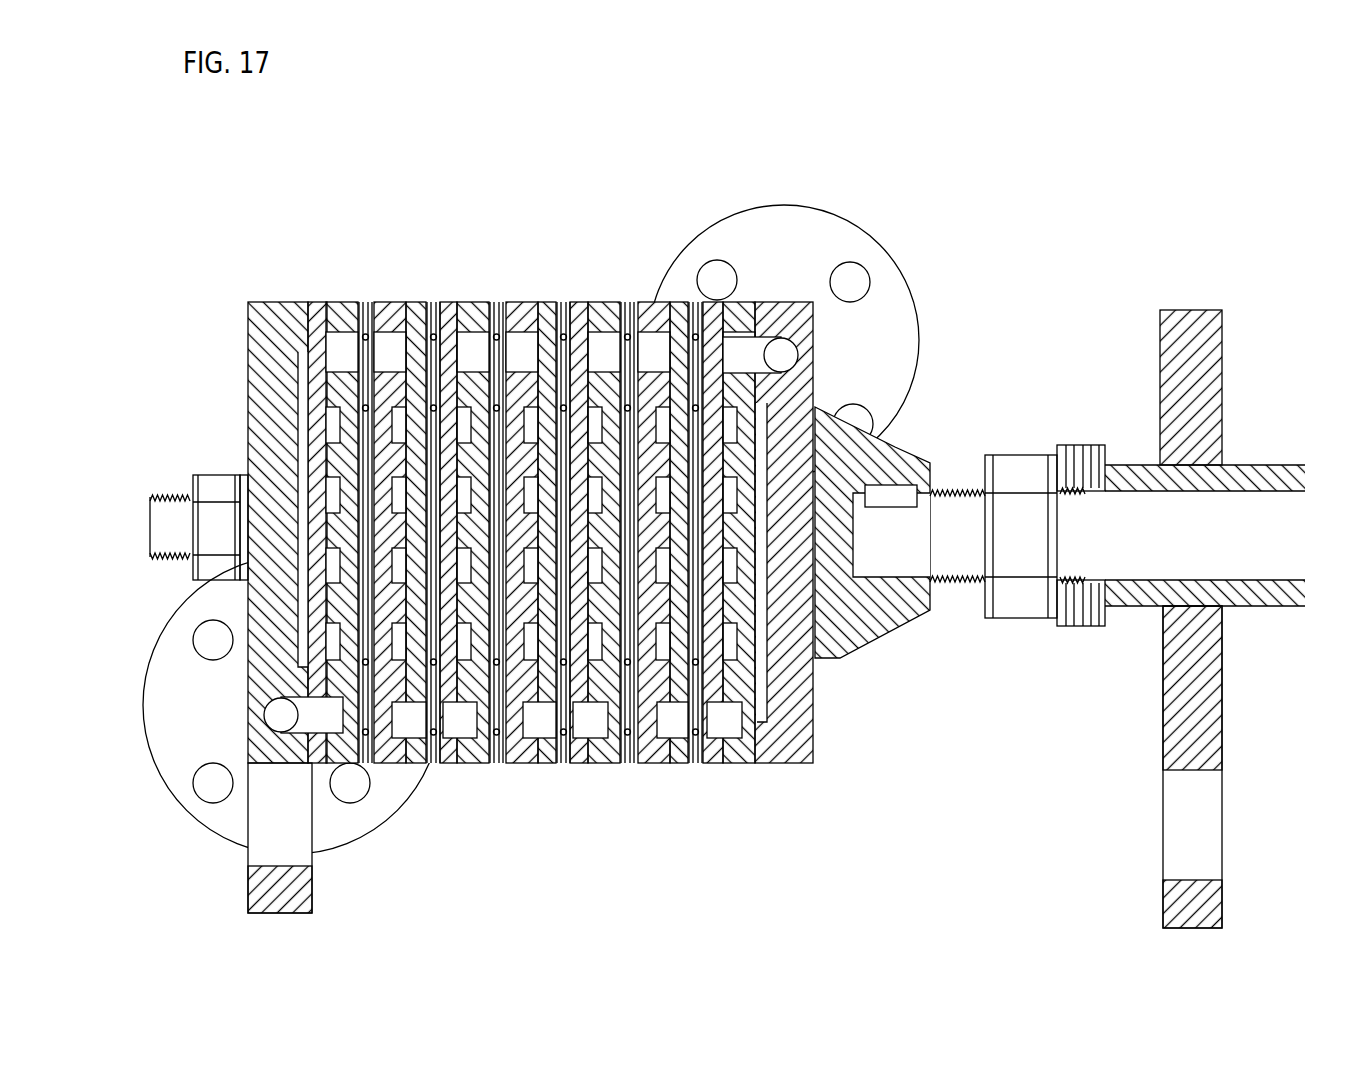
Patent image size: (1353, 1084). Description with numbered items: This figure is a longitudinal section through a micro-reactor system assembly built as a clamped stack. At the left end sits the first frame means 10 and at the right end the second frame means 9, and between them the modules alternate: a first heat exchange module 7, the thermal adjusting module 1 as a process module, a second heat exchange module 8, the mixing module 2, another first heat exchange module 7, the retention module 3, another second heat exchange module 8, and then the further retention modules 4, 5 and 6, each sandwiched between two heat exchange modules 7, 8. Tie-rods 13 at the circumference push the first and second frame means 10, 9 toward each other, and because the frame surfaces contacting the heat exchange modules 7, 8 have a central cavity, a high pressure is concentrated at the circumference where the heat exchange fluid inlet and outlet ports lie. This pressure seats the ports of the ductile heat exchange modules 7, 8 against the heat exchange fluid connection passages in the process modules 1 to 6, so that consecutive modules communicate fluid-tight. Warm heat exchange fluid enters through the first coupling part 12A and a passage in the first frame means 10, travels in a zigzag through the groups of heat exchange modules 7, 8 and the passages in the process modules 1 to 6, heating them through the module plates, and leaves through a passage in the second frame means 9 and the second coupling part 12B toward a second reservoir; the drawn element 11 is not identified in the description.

The thermal adjusting module 1 is at (377, 768).
The mixing module 2 is at (433, 768).
The retention module 3 is at (500, 768).
The retention module 4 is at (570, 768).
The retention module 5 is at (635, 768).
The retention module 6 is at (700, 768).
The first heat exchange module 7 is at (330, 302).
The second heat exchange module 8 is at (397, 302).
The second frame means 9 is at (797, 768).
The first frame means 10 is at (273, 322).
The pipe with flange 11 is at (1183, 332).
The first coupling part 12A is at (224, 822).
The second coupling part 12B is at (895, 305).
The tie-rods 13 is at (172, 513).